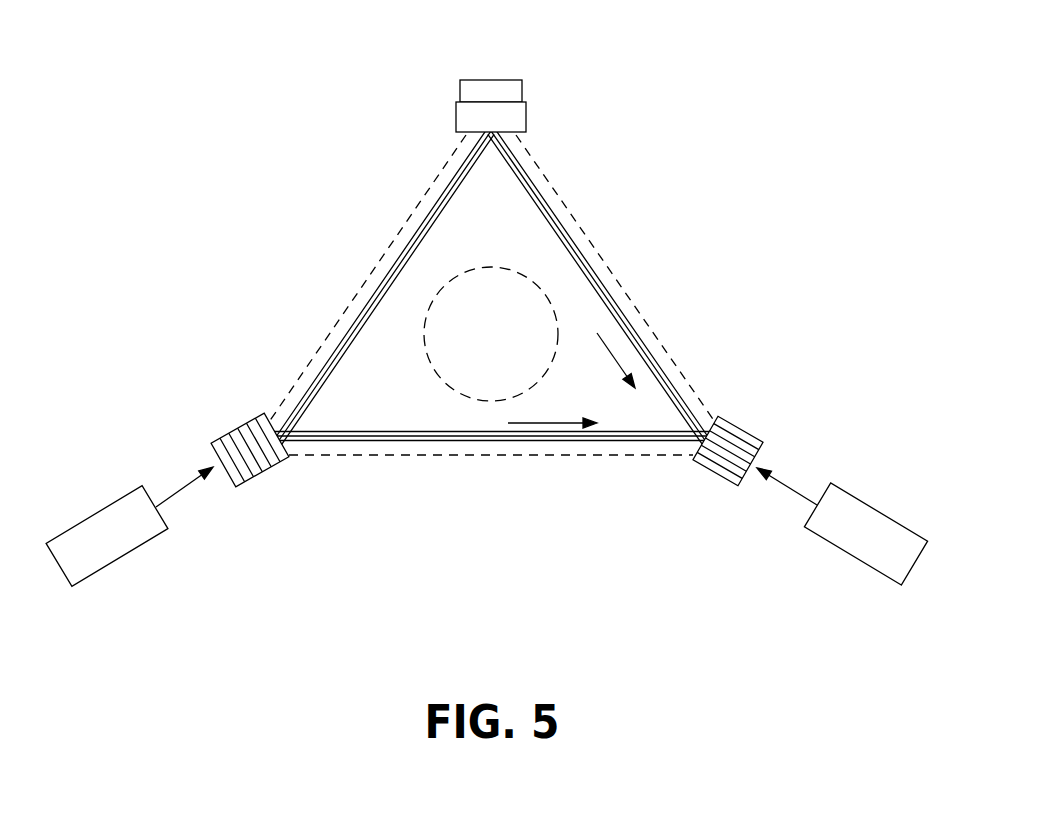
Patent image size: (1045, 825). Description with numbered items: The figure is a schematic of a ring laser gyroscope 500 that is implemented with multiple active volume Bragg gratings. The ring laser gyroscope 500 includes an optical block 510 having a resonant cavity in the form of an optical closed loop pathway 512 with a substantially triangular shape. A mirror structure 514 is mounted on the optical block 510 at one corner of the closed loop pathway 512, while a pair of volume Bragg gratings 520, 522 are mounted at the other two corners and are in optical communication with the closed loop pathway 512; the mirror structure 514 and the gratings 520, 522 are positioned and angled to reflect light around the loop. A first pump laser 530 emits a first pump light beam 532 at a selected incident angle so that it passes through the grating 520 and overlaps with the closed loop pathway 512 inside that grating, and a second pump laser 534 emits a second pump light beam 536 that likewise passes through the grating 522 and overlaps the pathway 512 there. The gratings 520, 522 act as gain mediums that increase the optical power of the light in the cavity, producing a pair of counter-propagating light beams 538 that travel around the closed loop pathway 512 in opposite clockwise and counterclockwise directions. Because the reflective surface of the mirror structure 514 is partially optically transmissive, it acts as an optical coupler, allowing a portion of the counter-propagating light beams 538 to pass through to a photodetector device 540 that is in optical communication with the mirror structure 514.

The ring laser gyroscope 500 is at (643, 129).
The optical block 510 is at (615, 277).
The optical closed loop pathway 512 is at (352, 337).
The mirror structure 514 is at (455, 108).
The volume Bragg grating 520 is at (738, 425).
The volume Bragg grating 522 is at (225, 470).
The first pump laser 530 is at (832, 548).
The first pump light beam 532 is at (800, 492).
The second pump laser 534 is at (140, 550).
The second pump light beam 536 is at (173, 493).
The counter-propagating light beams 538 is at (491, 311).
The photodetector device 540 is at (485, 80).